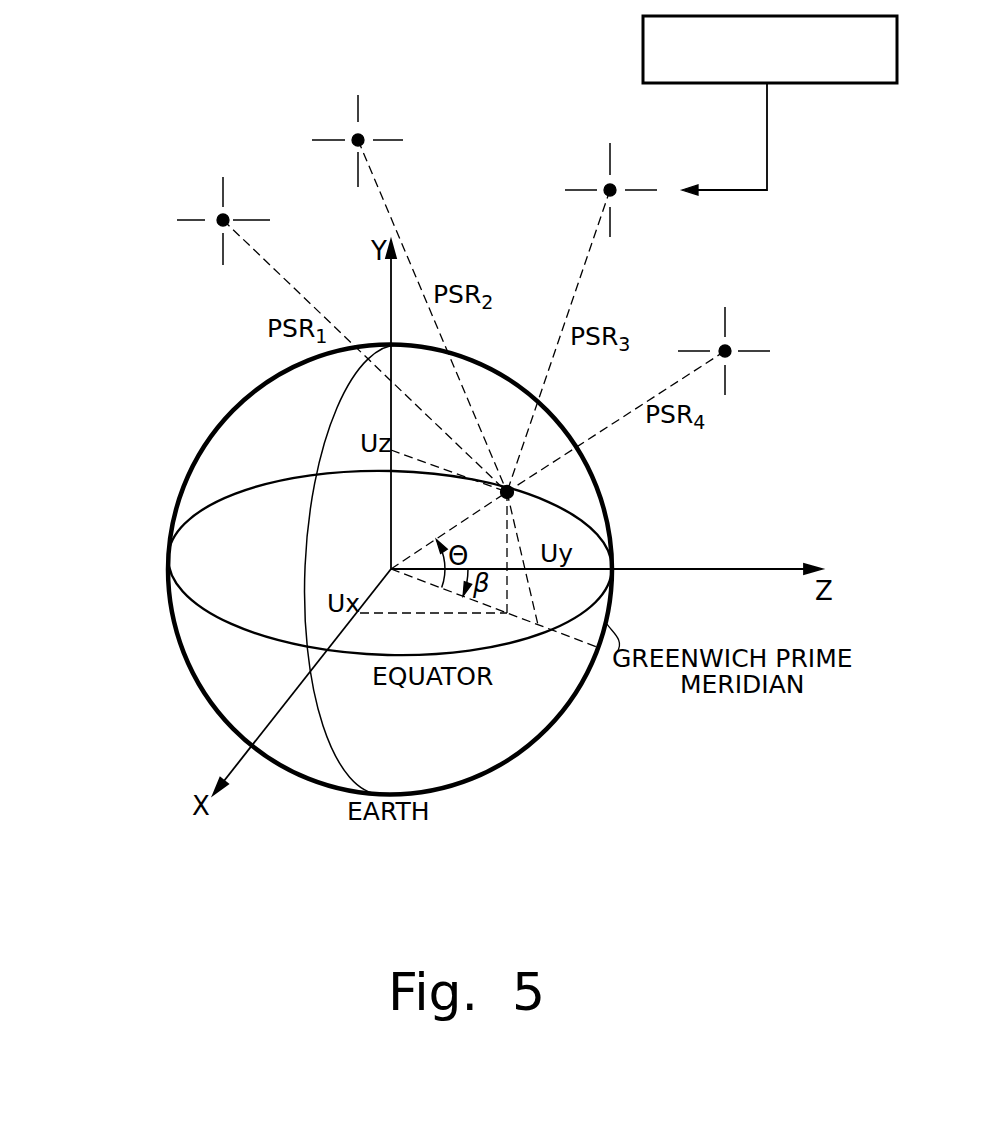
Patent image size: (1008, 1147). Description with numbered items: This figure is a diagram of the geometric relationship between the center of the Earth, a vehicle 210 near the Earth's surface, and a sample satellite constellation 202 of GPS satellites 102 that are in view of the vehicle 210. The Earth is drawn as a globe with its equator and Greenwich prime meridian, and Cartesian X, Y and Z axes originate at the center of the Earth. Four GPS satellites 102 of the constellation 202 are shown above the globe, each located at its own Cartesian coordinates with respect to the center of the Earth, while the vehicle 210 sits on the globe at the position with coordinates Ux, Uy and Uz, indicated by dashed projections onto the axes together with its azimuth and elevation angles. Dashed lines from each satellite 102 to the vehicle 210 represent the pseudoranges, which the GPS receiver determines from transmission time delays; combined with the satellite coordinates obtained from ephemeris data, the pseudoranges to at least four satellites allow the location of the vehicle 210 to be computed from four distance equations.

The satellite constellation 202 is at (500, 65).
The GPS satellite 102 is at (468, 288).
The vehicle 210 is at (507, 492).